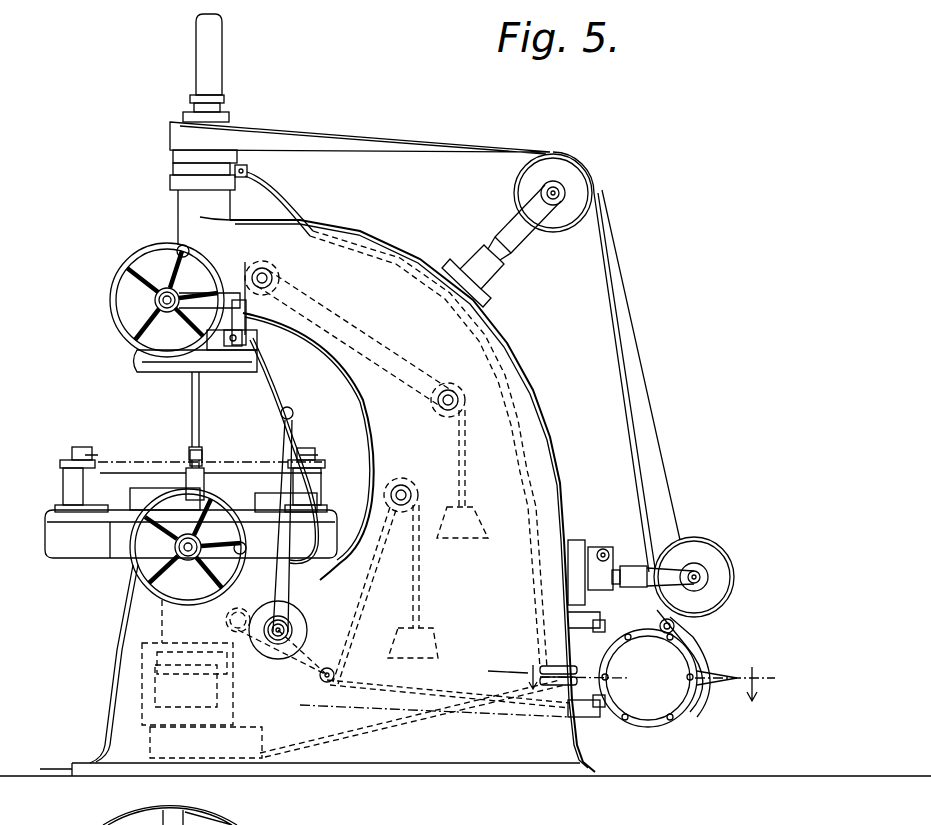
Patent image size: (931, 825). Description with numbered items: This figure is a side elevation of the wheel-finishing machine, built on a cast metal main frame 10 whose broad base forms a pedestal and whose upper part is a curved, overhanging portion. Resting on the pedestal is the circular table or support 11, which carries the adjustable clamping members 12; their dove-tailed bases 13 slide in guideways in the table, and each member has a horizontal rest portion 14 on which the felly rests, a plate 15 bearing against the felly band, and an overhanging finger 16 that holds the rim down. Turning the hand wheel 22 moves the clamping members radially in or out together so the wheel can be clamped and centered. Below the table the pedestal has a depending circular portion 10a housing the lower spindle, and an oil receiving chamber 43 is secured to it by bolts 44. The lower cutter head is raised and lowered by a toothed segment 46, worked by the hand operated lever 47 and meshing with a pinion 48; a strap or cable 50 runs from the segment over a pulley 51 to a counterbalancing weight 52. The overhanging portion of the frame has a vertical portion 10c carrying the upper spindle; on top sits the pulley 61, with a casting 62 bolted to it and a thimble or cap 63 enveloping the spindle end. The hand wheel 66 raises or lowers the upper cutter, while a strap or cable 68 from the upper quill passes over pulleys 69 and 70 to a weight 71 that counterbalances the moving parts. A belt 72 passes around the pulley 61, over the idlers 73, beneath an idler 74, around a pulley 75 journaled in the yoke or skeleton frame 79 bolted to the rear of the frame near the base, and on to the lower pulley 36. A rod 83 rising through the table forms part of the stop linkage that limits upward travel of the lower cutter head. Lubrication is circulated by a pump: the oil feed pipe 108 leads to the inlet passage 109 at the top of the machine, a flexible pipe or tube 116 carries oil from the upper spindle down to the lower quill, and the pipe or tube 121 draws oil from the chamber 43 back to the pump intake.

The main frame 10 is at (126, 577).
The depending circular portion 10a is at (180, 619).
The vertical portion 10c is at (187, 190).
The circular table or support 11 is at (191, 534).
The clamping members 12 is at (68, 485).
The bases 13 is at (293, 527).
The horizontal rest portion 14 is at (108, 472).
The plate 15 is at (97, 466).
The finger 16 is at (85, 452).
The hand wheel 22 is at (137, 538).
The lower pulley 36 is at (187, 684).
The oil receiving chamber 43 is at (206, 742).
The bolts 44 is at (235, 705).
The toothed segment 46 is at (233, 622).
The hand operated lever 47 is at (292, 598).
The pinion 48 is at (234, 596).
The strap or cable 50 is at (345, 628).
The pulley 51 is at (407, 485).
The weight 52 is at (426, 581).
The pulley 61 is at (232, 123).
The casting 62 is at (223, 110).
The thimble or cap 63 is at (213, 68).
The hand wheel 66 is at (120, 300).
The strap or cable 68 is at (243, 328).
The pulley 69 is at (273, 290).
The pulley 70 is at (440, 397).
The weight 71 is at (473, 520).
The belt 72 is at (420, 145).
The idlers 73 is at (575, 176).
The idler 74 is at (710, 558).
The pulley 75 is at (695, 697).
The yoke or skeleton frame 79 is at (603, 637).
The rod 83 is at (195, 400).
The oil feed pipe 108 is at (290, 180).
The inlet passage 109 is at (240, 165).
The flexible pipe or tube 116 is at (267, 387).
The pipe or tube 121 is at (402, 725).